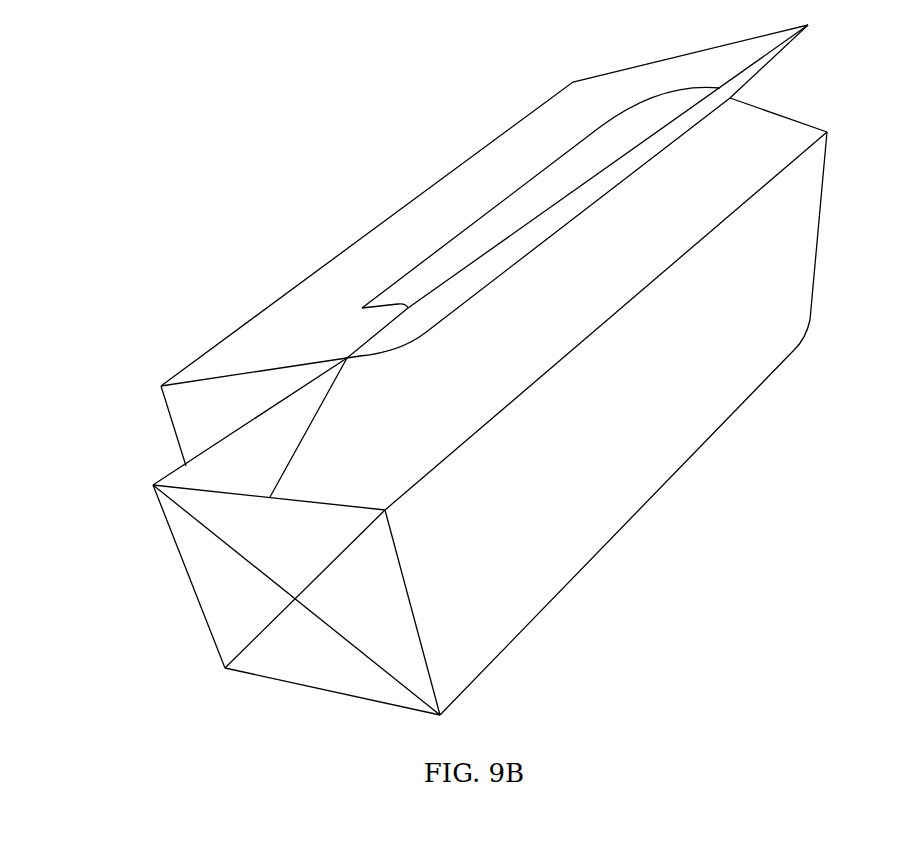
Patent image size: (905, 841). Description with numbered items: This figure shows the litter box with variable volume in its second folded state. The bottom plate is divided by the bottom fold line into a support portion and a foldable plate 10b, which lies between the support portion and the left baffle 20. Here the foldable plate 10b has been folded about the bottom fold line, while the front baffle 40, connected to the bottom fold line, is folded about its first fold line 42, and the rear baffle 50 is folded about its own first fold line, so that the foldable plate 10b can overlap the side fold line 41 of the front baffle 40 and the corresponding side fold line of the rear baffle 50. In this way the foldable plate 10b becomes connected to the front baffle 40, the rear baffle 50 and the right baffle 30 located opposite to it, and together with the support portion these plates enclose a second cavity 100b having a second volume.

The foldable plate 10b is at (157, 405).
The left baffle 20 is at (388, 238).
The right baffle 30 is at (578, 482).
The front baffle 40 is at (334, 670).
The side fold line 41 is at (197, 600).
The first fold line 42 is at (287, 457).
The rear baffle 50 is at (786, 107).
The second cavity 100b is at (492, 358).